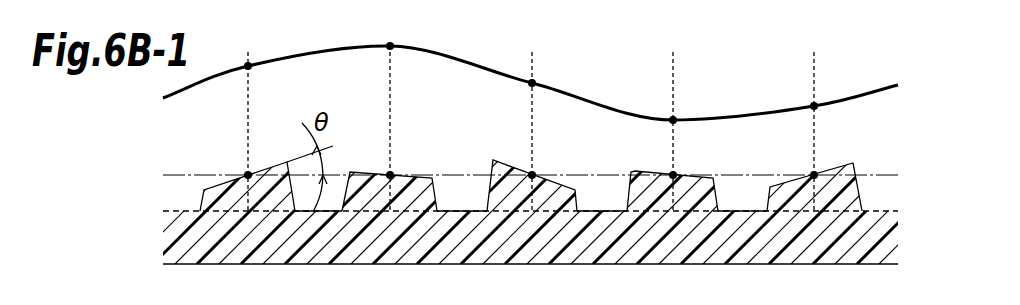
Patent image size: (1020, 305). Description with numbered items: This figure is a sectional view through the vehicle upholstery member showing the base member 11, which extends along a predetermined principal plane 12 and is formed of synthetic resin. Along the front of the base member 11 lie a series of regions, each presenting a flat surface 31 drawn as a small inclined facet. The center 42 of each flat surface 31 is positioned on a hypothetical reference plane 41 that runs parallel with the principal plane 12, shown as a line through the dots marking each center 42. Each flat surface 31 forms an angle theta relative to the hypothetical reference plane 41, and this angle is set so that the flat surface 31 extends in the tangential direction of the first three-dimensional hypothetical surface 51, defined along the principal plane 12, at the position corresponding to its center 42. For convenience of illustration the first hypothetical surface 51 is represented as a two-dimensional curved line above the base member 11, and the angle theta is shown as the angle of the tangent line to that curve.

The base member 11 is at (150, 243).
The principal plane 12 is at (827, 264).
The flat surface 31 is at (217, 183).
The hypothetical reference plane 41 is at (455, 173).
The center 42 is at (244, 173).
The first three-dimensional hypothetical surface 51 is at (713, 118).